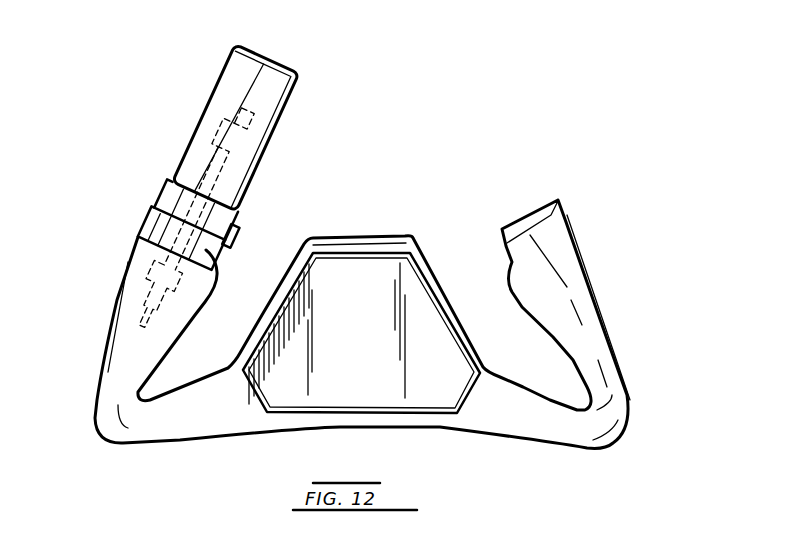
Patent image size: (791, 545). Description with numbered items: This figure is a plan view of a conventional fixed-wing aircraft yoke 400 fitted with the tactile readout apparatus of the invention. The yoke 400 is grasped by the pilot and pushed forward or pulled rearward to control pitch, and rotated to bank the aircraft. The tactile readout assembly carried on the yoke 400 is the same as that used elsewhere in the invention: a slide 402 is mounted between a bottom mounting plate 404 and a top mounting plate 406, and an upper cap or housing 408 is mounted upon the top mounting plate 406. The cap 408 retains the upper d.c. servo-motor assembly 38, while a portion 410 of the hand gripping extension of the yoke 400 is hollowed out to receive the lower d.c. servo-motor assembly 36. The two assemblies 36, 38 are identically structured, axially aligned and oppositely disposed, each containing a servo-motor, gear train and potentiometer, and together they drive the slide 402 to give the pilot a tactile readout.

The yoke control 400 is at (521, 89).
The slide 402 is at (237, 230).
The bottom mounting plate 404 is at (156, 223).
The top mounting plate 406 is at (177, 187).
The upper cap or housing 408 is at (268, 120).
The hand gripping extension portion 410 is at (120, 345).
The d.c. servo-motor assembly 38 is at (214, 137).
The d.c. servo-motor assembly 36 is at (145, 284).